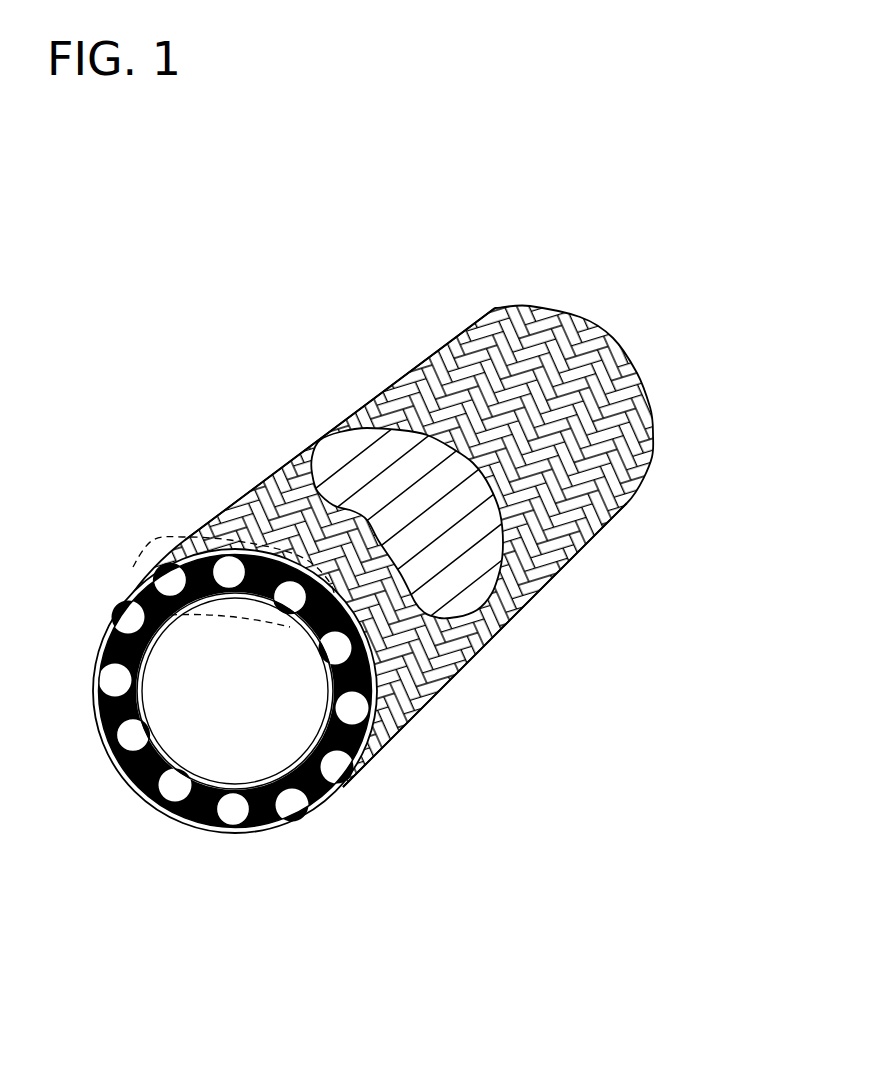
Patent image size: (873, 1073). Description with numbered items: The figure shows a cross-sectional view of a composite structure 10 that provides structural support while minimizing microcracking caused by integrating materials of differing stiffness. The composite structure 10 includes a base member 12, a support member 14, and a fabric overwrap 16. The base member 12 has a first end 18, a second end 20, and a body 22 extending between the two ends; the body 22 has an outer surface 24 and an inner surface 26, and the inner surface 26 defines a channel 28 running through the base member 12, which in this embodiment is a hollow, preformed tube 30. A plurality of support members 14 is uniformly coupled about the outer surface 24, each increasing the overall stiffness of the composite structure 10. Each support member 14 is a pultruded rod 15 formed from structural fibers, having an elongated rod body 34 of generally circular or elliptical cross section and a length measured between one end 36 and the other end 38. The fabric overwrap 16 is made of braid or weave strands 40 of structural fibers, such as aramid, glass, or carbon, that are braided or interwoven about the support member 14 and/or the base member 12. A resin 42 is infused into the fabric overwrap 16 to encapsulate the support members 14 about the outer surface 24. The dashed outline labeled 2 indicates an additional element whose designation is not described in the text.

The hidden inner element 2 is at (140, 560).
The composite structure 10 is at (210, 385).
The base member 12 is at (145, 773).
The support member 14 is at (178, 584).
The pultruded rod 15 is at (171, 582).
The fabric overwrap 16 is at (482, 632).
The first end 18 is at (262, 550).
The second end 20 is at (617, 345).
The body 22 is at (170, 640).
The outer surface 24 is at (131, 764).
The inner surface 26 is at (147, 705).
The channel 28 is at (237, 699).
The hollow, preformed tube 30 is at (262, 800).
The elongated rod body 34 is at (392, 477).
The end 36 is at (290, 597).
The end 38 is at (580, 312).
The braid or weave strands 40 is at (422, 678).
The resin 42 is at (100, 641).